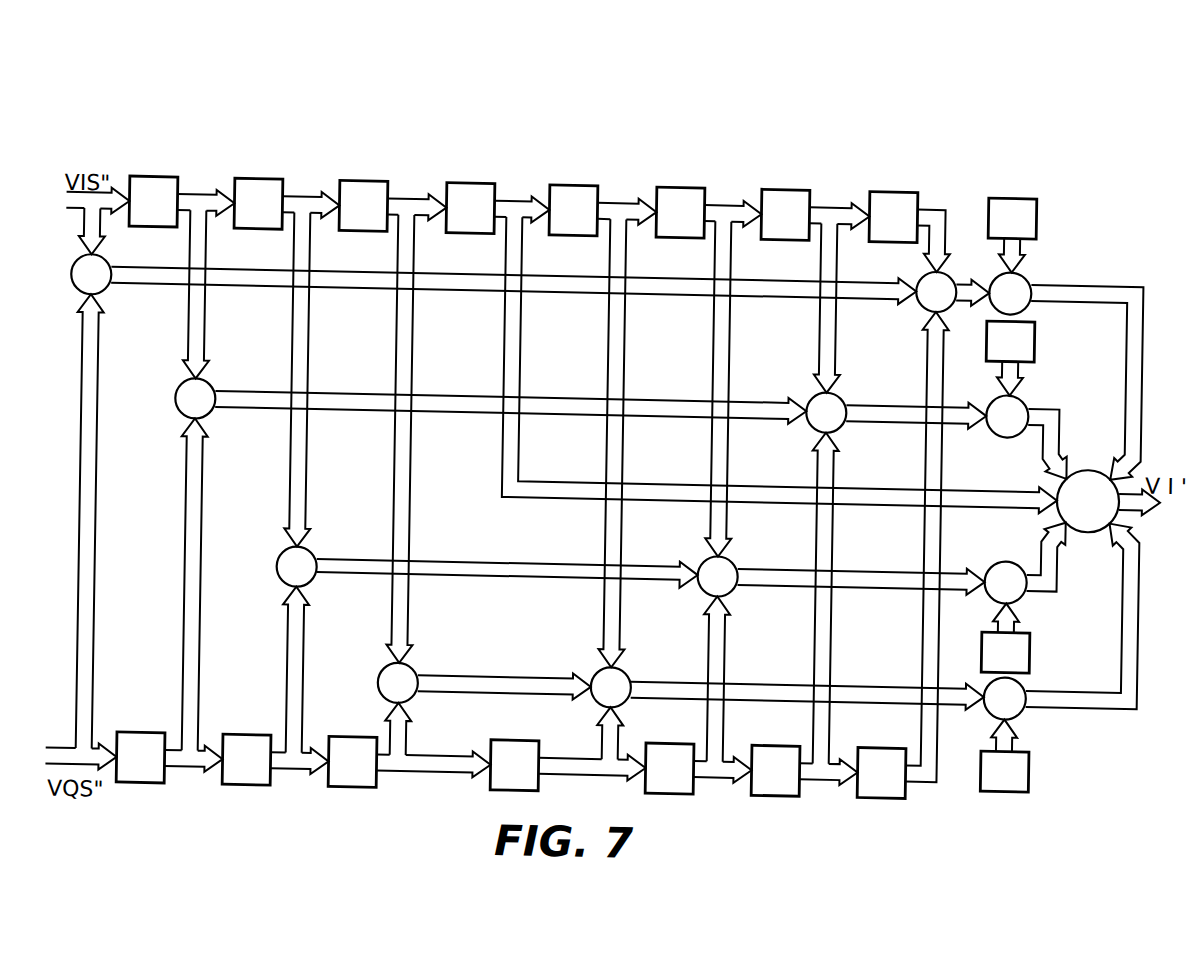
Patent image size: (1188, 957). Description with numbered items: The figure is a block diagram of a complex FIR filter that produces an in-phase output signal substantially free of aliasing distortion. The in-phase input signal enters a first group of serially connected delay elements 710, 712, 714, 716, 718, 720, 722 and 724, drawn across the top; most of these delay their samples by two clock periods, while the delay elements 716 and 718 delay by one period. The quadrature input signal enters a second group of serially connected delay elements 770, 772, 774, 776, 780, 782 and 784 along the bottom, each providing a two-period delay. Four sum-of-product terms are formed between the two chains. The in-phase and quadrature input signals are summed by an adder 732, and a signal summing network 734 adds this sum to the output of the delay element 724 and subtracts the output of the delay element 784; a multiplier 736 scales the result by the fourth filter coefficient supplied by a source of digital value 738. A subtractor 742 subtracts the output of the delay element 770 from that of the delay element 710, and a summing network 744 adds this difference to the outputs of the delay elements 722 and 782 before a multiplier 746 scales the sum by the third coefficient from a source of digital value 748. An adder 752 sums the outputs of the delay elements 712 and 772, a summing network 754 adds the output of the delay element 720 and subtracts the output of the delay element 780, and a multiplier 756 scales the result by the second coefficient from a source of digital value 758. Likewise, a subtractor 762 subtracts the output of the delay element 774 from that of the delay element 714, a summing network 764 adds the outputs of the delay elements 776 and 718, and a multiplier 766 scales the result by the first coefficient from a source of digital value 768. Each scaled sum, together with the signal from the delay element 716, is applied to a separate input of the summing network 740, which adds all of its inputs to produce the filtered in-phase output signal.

The delay element 710 is at (151, 220).
The delay element 712 is at (257, 221).
The delay element 714 is at (362, 221).
The delay element 716 is at (470, 224).
The delay element 718 is at (573, 226).
The delay element 720 is at (680, 228).
The delay element 722 is at (785, 230).
The delay element 724 is at (902, 240).
The adder 732 is at (108, 302).
The signal summing network 734 is at (914, 308).
The multiplier 736 is at (1023, 270).
The source of digital value 738 is at (1032, 212).
The summing network 740 is at (1066, 470).
The subtractor 742 is at (210, 392).
The summing network 744 is at (836, 392).
The multiplier 746 is at (1021, 396).
The source of digital value 748 is at (1032, 338).
The adder 752 is at (313, 555).
The summing network 754 is at (734, 588).
The multiplier 756 is at (1000, 554).
The source of digital value 758 is at (1032, 624).
The subtractor 762 is at (414, 672).
The summing network 764 is at (628, 666).
The multiplier 766 is at (1029, 682).
The source of digital value 768 is at (986, 783).
The delay element 770 is at (145, 742).
The delay element 772 is at (250, 740).
The delay element 774 is at (364, 740).
The delay element 776 is at (494, 743).
The delay element 780 is at (677, 742).
The delay element 782 is at (782, 742).
The delay element 784 is at (888, 742).